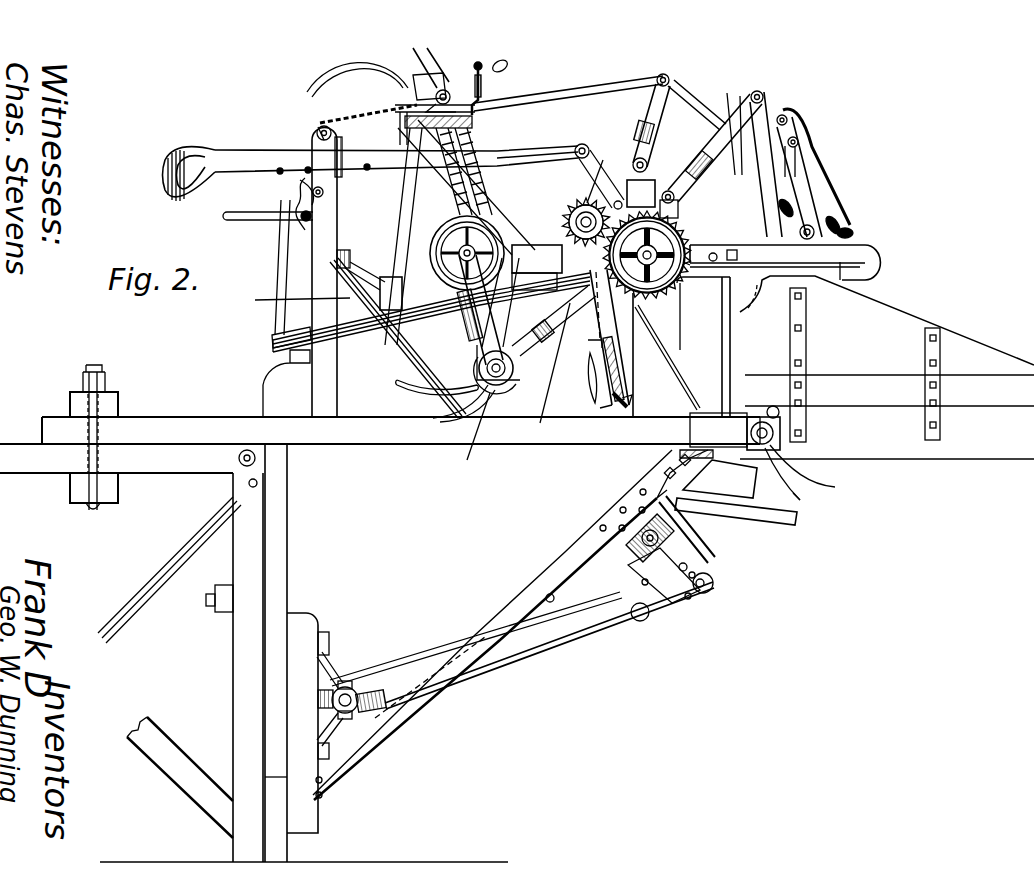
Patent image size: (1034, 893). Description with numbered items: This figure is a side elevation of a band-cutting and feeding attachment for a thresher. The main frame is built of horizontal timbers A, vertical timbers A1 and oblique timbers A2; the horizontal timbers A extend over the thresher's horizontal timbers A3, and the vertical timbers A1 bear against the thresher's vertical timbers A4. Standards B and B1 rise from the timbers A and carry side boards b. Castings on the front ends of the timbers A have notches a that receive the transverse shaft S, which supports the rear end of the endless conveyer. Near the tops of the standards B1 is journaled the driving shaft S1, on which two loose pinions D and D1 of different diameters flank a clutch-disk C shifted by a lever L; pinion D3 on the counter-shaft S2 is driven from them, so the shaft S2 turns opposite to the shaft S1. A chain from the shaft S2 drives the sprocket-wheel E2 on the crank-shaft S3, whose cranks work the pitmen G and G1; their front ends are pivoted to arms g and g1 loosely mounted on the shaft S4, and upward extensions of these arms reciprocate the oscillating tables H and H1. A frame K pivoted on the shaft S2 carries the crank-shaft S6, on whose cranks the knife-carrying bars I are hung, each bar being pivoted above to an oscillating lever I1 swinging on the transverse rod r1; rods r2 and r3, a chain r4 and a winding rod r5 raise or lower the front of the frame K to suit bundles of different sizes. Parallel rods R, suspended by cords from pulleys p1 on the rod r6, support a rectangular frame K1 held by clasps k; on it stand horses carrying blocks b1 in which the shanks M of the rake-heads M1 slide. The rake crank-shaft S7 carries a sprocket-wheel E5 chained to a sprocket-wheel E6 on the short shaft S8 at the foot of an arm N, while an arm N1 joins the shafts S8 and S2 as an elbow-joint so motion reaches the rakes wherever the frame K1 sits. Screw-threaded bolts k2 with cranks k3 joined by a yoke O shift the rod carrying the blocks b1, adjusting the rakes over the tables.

The horizontal timber A is at (178, 428).
The vertical timber A1 is at (288, 675).
The oblique timber A2 is at (527, 600).
The horizontal timber of thresher-frame A3 is at (67, 437).
The vertical timber of thresher-frame A4 is at (245, 707).
The vertical standard B is at (290, 363).
The vertical standard B1 is at (630, 378).
The clutch-disk C is at (833, 367).
The pinion D is at (647, 255).
The pinion D1 is at (582, 212).
The pinion D3 is at (681, 243).
The sprocket-wheel E2 is at (467, 337).
The sprocket-wheel E5 is at (395, 262).
The sprocket-wheel E6 is at (472, 434).
The pitman G is at (493, 673).
The pitman G1 is at (420, 640).
The longitudinally-oscillating table H is at (720, 479).
The longitudinally-oscillating table H1 is at (790, 515).
The knife-carrying bar I is at (803, 177).
The oscillating lever I1 is at (270, 262).
The frame K is at (880, 255).
The rectangular frame K1 is at (289, 302).
The clasp k is at (222, 572).
The screw-threaded bolt k2 is at (472, 124).
The crank k3 is at (486, 93).
The lever L is at (592, 380).
The shank M is at (325, 78).
The rake-head M1 is at (510, 240).
The arm N is at (455, 420).
The arm N1 is at (555, 373).
The transverse yoke O is at (484, 78).
The parallel rod R is at (273, 340).
The transverse shaft S is at (607, 135).
The transverse shaft S1 is at (603, 172).
The shaft S2 is at (733, 235).
The crank-shaft S3 is at (503, 380).
The shaft S4 is at (672, 538).
The crank-shaft S6 is at (830, 227).
The crank-shaft S7 is at (455, 228).
The short shaft S8 is at (357, 710).
The notch a is at (805, 497).
The side board b is at (417, 457).
The block b1 is at (412, 72).
The arm g is at (697, 563).
The arm g1 is at (640, 567).
The pulley p1 is at (308, 271).
The pin r is at (449, 97).
The transverse rod r1 is at (670, 185).
The rod r2 is at (718, 108).
The rod r3 is at (598, 82).
The chain r4 is at (380, 112).
The transverse rod r5 is at (323, 125).
The transverse rod r6 is at (290, 222).